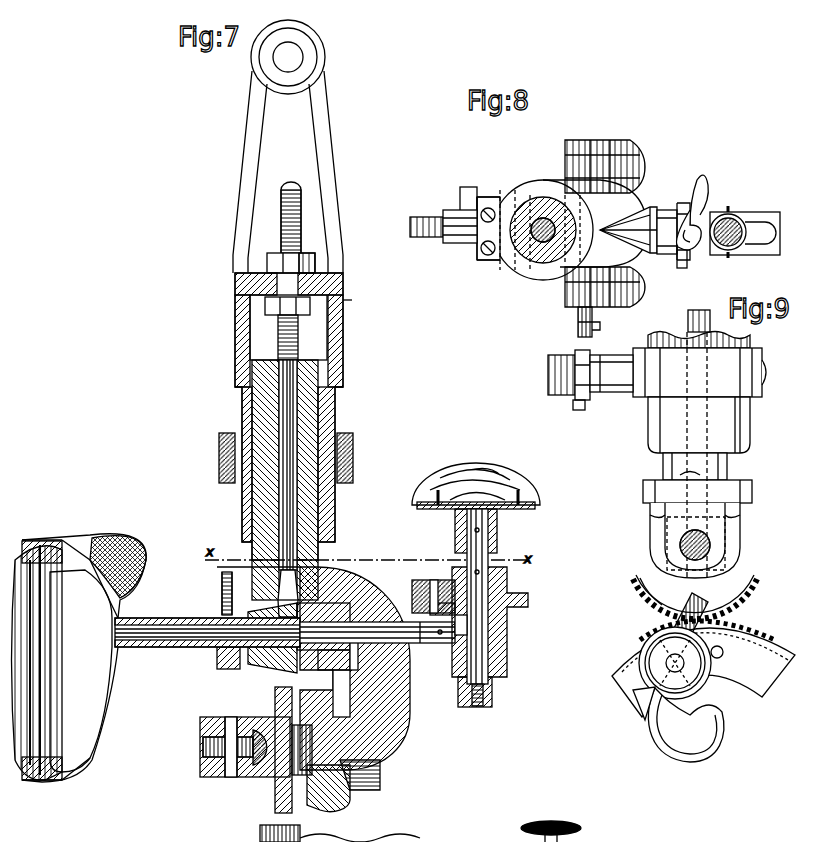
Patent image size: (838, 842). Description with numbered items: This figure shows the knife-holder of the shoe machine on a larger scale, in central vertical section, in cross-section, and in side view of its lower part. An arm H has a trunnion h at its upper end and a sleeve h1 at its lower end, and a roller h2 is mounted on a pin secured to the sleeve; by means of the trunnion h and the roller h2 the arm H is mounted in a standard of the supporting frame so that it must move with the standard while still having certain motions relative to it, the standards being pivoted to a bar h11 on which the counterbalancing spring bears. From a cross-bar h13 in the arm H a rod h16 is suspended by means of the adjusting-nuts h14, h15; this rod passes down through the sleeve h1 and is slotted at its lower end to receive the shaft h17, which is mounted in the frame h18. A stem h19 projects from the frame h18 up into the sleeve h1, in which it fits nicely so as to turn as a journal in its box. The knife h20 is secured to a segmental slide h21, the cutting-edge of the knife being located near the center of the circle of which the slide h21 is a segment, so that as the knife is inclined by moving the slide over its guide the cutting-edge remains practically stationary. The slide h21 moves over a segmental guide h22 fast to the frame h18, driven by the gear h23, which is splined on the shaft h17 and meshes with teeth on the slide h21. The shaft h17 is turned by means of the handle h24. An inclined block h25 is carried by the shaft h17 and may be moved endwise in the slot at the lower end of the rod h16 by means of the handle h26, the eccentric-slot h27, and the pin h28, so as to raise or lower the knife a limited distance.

In FIG. 7, the trunnion h is at (296, 57).
In FIG. 7, the arm H is at (356, 300).
In FIG. 7, the sleeve h1 is at (242, 502).
In FIG. 8, the sleeve h1 is at (553, 277).
In FIG. 9, the sleeve h1 is at (658, 432).
In FIG. 9, the roller h2 is at (578, 408).
In FIG. 7, the bar h11 is at (355, 470).
In FIG. 9, the bar h11 is at (762, 398).
In FIG. 7, the cross-bar h13 is at (258, 283).
In FIG. 7, the adjusting-nut h14 is at (305, 262).
In FIG. 7, the adjusting-nut h15 is at (306, 314).
In FIG. 7, the rod h16 is at (287, 399).
In FIG. 8, the rod h16 is at (533, 237).
In FIG. 7, the shaft h17 is at (190, 634).
In FIG. 8, the shaft h17 is at (435, 237).
In FIG. 9, the shaft h17 is at (800, 515).
In FIG. 7, the frame h18 is at (411, 710).
In FIG. 9, the frame h18 is at (662, 612).
In FIG. 7, the stem h19 is at (305, 421).
In FIG. 8, the stem h19 is at (538, 265).
In FIG. 9, the stem h19 is at (725, 463).
In FIG. 7, the knife h20 is at (275, 797).
In FIG. 9, the knife h20 is at (662, 733).
In FIG. 7, the segmental slide h21 is at (347, 807).
In FIG. 8, the segmental slide h21 is at (580, 140).
In FIG. 9, the segmental slide h21 is at (695, 663).
In FIG. 7, the segmental guide h22 is at (360, 770).
In FIG. 8, the segmental guide h22 is at (582, 320).
In FIG. 9, the segmental guide h22 is at (703, 669).
In FIG. 7, the gear h23 is at (318, 655).
In FIG. 9, the gear h23 is at (748, 583).
In FIG. 7, the handle h24 is at (98, 730).
In FIG. 7, the inclined block h25 is at (270, 650).
In FIG. 7, the handle h26 is at (480, 465).
In FIG. 7, the eccentric-slot h27 is at (497, 598).
In FIG. 8, the eccentric-slot h27 is at (693, 185).
In FIG. 7, the pin h28 is at (437, 585).
In FIG. 8, the pin h28 is at (693, 227).